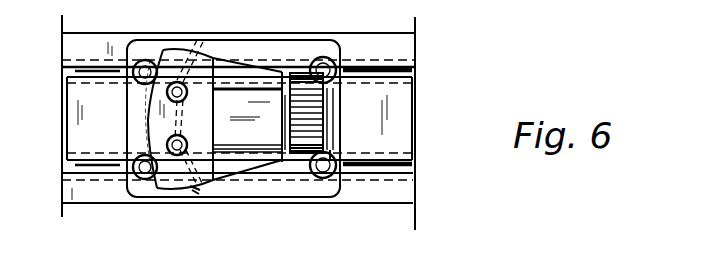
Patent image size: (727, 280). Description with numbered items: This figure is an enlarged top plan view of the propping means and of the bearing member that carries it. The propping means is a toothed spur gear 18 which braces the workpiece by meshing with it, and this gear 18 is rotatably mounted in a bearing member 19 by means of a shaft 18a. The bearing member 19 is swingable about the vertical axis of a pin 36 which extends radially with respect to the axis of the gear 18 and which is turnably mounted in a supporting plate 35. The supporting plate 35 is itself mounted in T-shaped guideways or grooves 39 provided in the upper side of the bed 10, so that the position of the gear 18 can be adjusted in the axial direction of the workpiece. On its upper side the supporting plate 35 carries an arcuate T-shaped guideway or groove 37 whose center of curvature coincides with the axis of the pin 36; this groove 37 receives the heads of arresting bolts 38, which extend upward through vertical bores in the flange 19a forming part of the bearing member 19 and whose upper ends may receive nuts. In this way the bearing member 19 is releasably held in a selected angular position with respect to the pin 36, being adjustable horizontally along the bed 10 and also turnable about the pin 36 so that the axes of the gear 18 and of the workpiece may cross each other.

The bed 10 is at (397, 190).
The spur gear 18 is at (302, 160).
The shaft 18a is at (285, 160).
The bearing member 19 is at (223, 173).
The flange 19a is at (150, 127).
The supporting plate 35 is at (155, 187).
The pin 36 is at (330, 117).
The arcuate T-shaped guideway or groove 37 is at (193, 193).
The arresting bolts 38 is at (183, 102).
The T-shaped guideways or grooves 39 is at (410, 67).